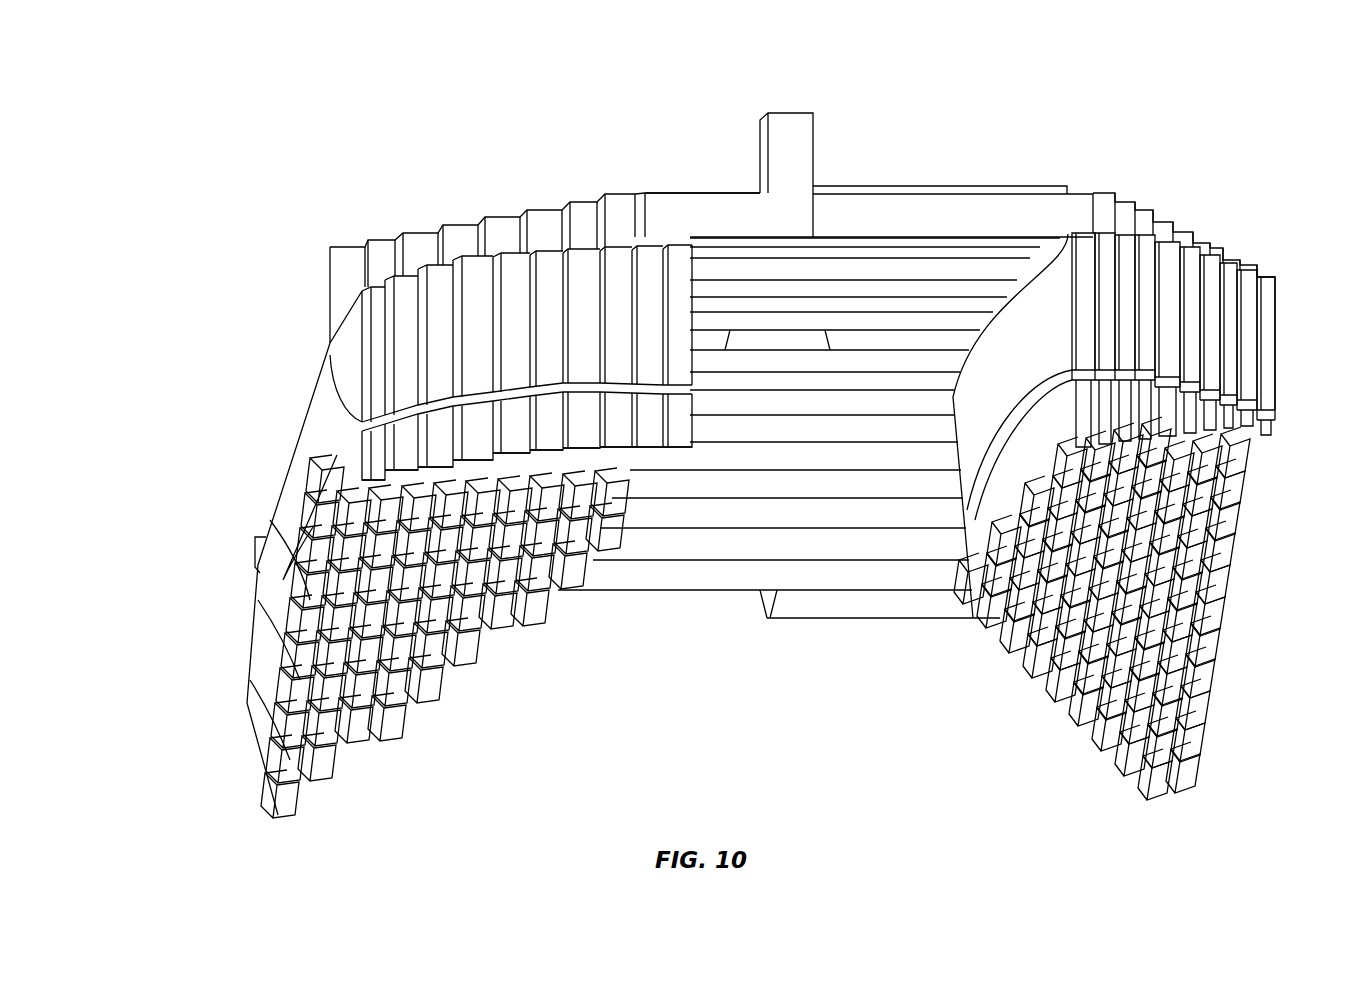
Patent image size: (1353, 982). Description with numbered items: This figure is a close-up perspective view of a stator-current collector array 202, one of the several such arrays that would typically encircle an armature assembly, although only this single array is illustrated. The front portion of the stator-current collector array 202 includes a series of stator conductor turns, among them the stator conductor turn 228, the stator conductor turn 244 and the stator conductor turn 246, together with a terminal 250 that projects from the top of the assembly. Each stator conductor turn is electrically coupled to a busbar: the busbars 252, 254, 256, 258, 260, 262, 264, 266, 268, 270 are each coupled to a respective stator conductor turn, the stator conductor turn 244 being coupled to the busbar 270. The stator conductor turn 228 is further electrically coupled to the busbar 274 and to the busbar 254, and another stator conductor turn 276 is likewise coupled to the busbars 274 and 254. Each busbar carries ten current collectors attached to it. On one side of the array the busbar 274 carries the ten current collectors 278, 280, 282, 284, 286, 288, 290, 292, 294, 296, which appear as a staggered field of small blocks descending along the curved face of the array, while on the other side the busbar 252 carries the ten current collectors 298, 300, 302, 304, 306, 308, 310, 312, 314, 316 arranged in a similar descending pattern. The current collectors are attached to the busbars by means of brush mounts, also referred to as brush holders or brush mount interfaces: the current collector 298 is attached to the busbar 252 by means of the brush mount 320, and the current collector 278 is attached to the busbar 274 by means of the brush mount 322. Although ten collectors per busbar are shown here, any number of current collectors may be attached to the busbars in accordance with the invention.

The stator-current collector array 202 is at (491, 99).
The stator conductor turn 228 is at (327, 262).
The stator conductor turn 244 is at (930, 193).
The stator conductor turn 246 is at (712, 193).
The terminal 250 is at (792, 112).
The busbar 252 is at (1265, 402).
The busbar 254 is at (1247, 362).
The busbar 256 is at (1230, 325).
The busbar 258 is at (1212, 288).
The busbar 260 is at (1190, 320).
The busbar 262 is at (1172, 278).
The busbar 264 is at (1148, 268).
The busbar 266 is at (1125, 257).
The busbar 268 is at (1105, 247).
The busbar 270 is at (1085, 237).
The busbar 274 is at (298, 512).
The stator conductor turn 276 is at (258, 557).
The current collector 278 is at (350, 467).
The current collector 280 is at (350, 497).
The current collector 282 is at (350, 522).
The current collector 284 is at (338, 552).
The current collector 286 is at (330, 585).
The current collector 288 is at (320, 620).
The current collector 290 is at (312, 663).
The current collector 292 is at (303, 708).
The current collector 294 is at (297, 748).
The current collector 296 is at (290, 797).
The current collector 298 is at (1245, 463).
The current collector 300 is at (1240, 490).
The current collector 302 is at (1233, 520).
The current collector 304 is at (1226, 550).
The current collector 306 is at (1220, 582).
The current collector 308 is at (1214, 615).
The current collector 310 is at (1207, 648).
The current collector 312 is at (1200, 680).
The current collector 314 is at (1194, 712).
The current collector 316 is at (1188, 745).
The brush mount 320 is at (1265, 422).
The brush mount 322 is at (370, 425).